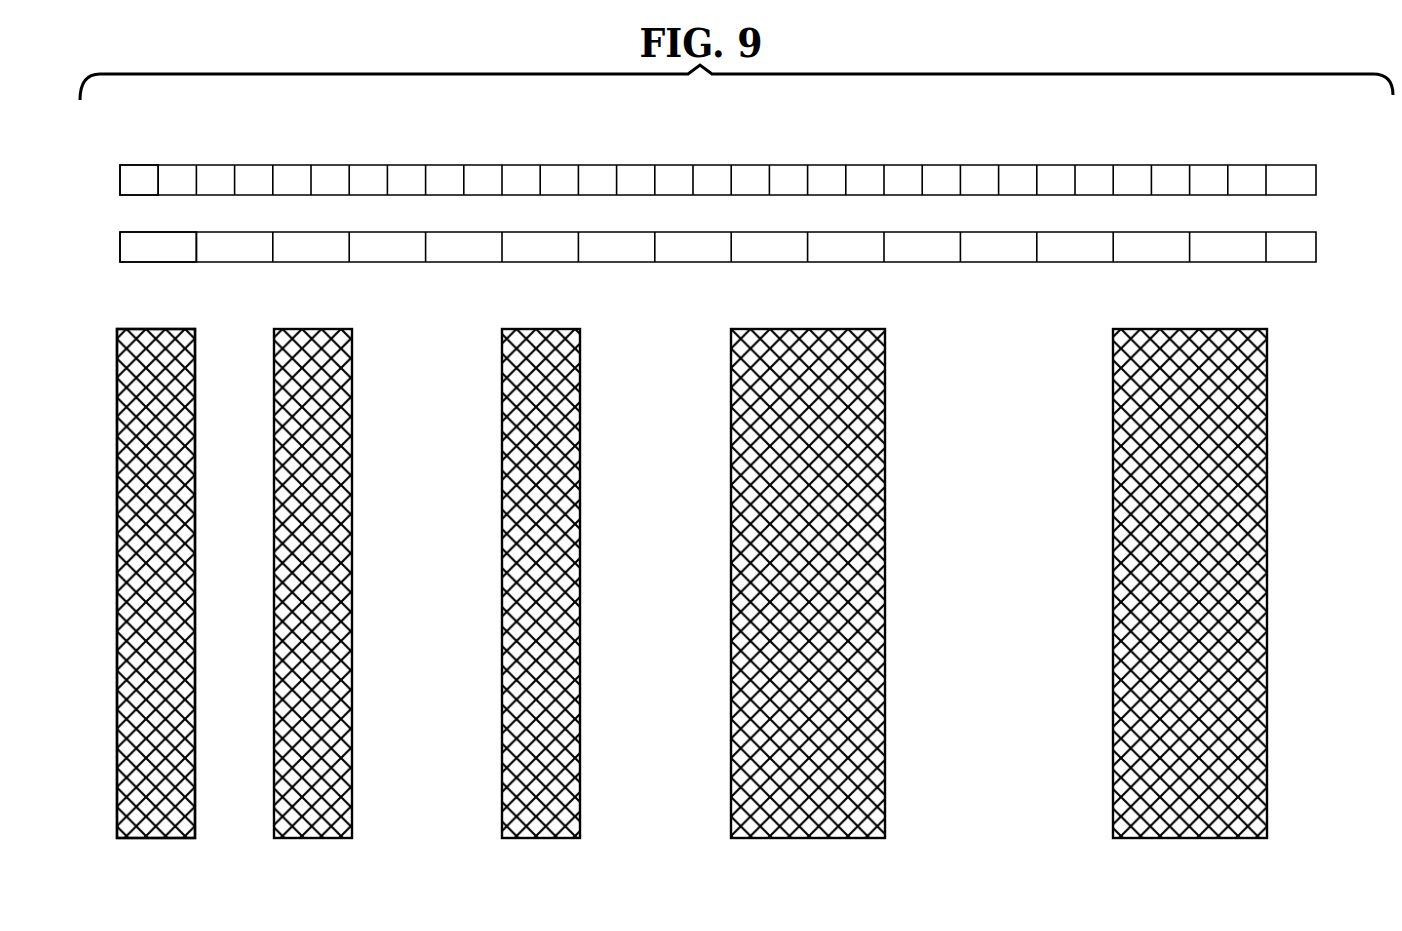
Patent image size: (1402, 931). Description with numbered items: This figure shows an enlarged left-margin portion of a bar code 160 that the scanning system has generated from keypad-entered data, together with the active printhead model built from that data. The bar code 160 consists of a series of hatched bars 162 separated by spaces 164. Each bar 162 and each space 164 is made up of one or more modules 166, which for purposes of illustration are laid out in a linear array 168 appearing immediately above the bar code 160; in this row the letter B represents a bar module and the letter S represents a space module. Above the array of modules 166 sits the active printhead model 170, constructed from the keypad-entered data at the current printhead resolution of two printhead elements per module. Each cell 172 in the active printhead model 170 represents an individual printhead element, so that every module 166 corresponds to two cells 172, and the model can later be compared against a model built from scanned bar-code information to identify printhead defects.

The bar code 160 is at (1305, 530).
The bar 162 is at (150, 840).
The space 164 is at (232, 833).
The module 166 is at (120, 248).
The linear array 168 is at (1340, 237).
The active printhead model 170 is at (1340, 162).
The cell 172 is at (140, 165).